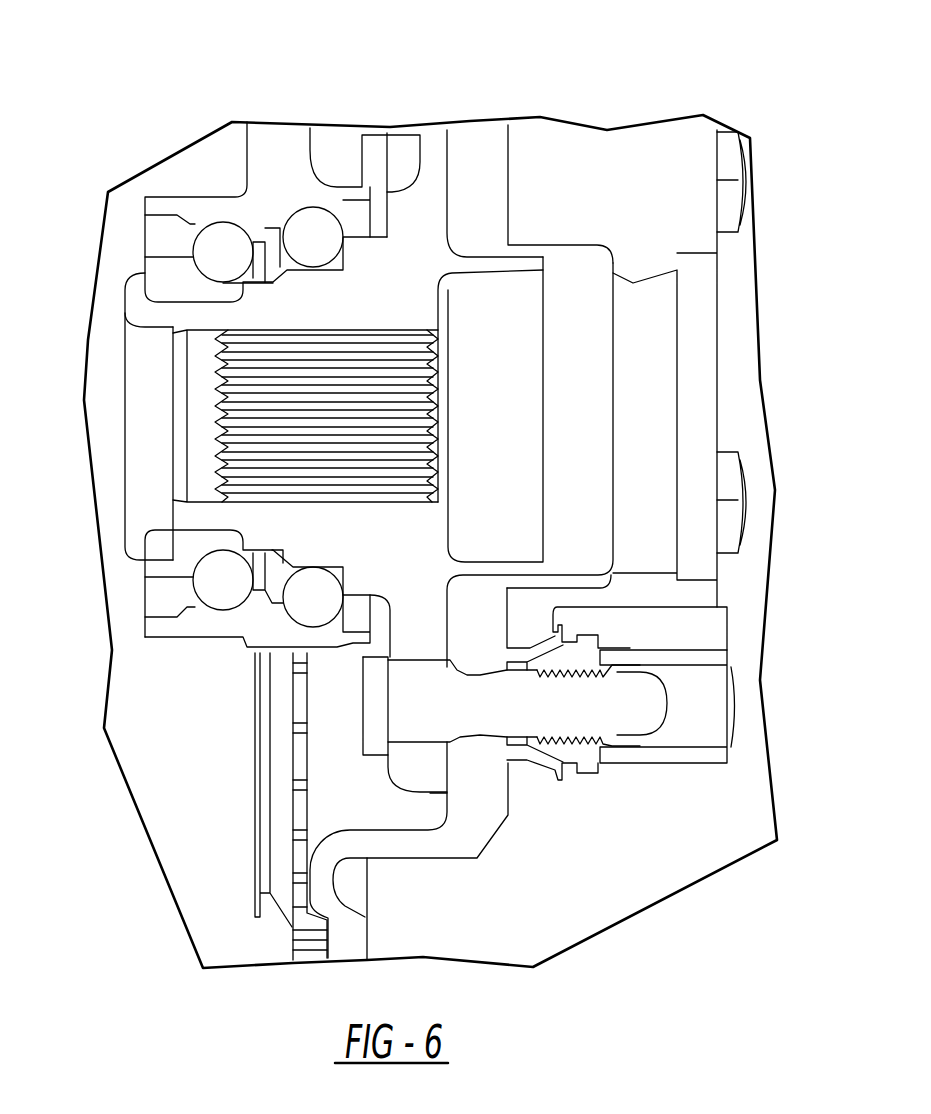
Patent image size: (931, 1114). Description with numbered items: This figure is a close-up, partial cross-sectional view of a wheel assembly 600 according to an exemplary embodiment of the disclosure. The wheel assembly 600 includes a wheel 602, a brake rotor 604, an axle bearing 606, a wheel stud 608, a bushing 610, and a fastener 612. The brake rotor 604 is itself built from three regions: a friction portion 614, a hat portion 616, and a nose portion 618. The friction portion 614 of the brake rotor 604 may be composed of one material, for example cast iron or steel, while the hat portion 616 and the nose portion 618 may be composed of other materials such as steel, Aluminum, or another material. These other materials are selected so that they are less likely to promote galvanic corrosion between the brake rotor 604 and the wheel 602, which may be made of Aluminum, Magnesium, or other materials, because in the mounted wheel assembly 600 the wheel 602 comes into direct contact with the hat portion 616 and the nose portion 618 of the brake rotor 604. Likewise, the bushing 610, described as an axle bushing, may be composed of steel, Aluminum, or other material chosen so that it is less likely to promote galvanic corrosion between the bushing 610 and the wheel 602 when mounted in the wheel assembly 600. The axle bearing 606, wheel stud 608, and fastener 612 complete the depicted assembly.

The wheel assembly 600 is at (180, 92).
The wheel 602 is at (542, 172).
The brake rotor 604 is at (213, 722).
The axle bearing 606 is at (195, 398).
The wheel stud 608 is at (400, 708).
The bushing 610 is at (557, 767).
The fastener 612 is at (703, 760).
The friction portion 614 is at (267, 935).
The hat portion 616 is at (467, 813).
The nose portion 618 is at (583, 383).